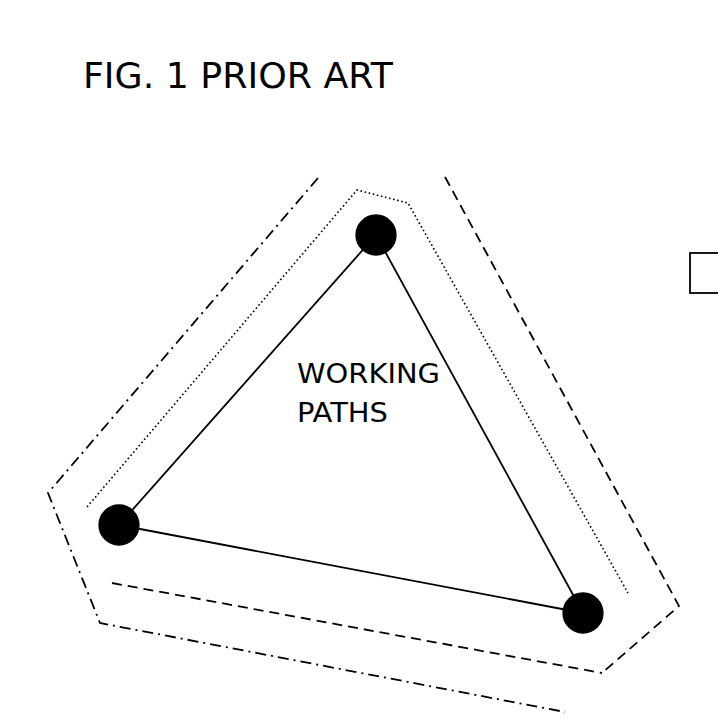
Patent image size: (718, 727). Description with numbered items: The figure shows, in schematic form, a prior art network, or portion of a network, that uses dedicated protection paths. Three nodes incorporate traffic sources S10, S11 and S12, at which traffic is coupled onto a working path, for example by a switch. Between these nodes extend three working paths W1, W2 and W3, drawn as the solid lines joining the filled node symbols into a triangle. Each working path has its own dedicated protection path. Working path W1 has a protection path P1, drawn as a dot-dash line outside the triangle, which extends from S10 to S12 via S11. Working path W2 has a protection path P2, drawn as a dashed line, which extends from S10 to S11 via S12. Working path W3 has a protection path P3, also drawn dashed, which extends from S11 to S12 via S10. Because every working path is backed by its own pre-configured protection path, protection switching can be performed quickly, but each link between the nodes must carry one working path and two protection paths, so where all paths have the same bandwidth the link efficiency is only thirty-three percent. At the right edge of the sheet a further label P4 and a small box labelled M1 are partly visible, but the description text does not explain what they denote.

The protection path P1 is at (177, 388).
The protection path P2 is at (668, 568).
The protection path P3 is at (123, 638).
The optical path P4 is at (686, 139).
The multiplexer M1 is at (700, 288).
The traffic source S10 is at (153, 525).
The traffic source S11 is at (364, 258).
The traffic source S12 is at (547, 601).
The working path W1 is at (280, 558).
The working path W2 is at (190, 443).
The working path W3 is at (497, 460).